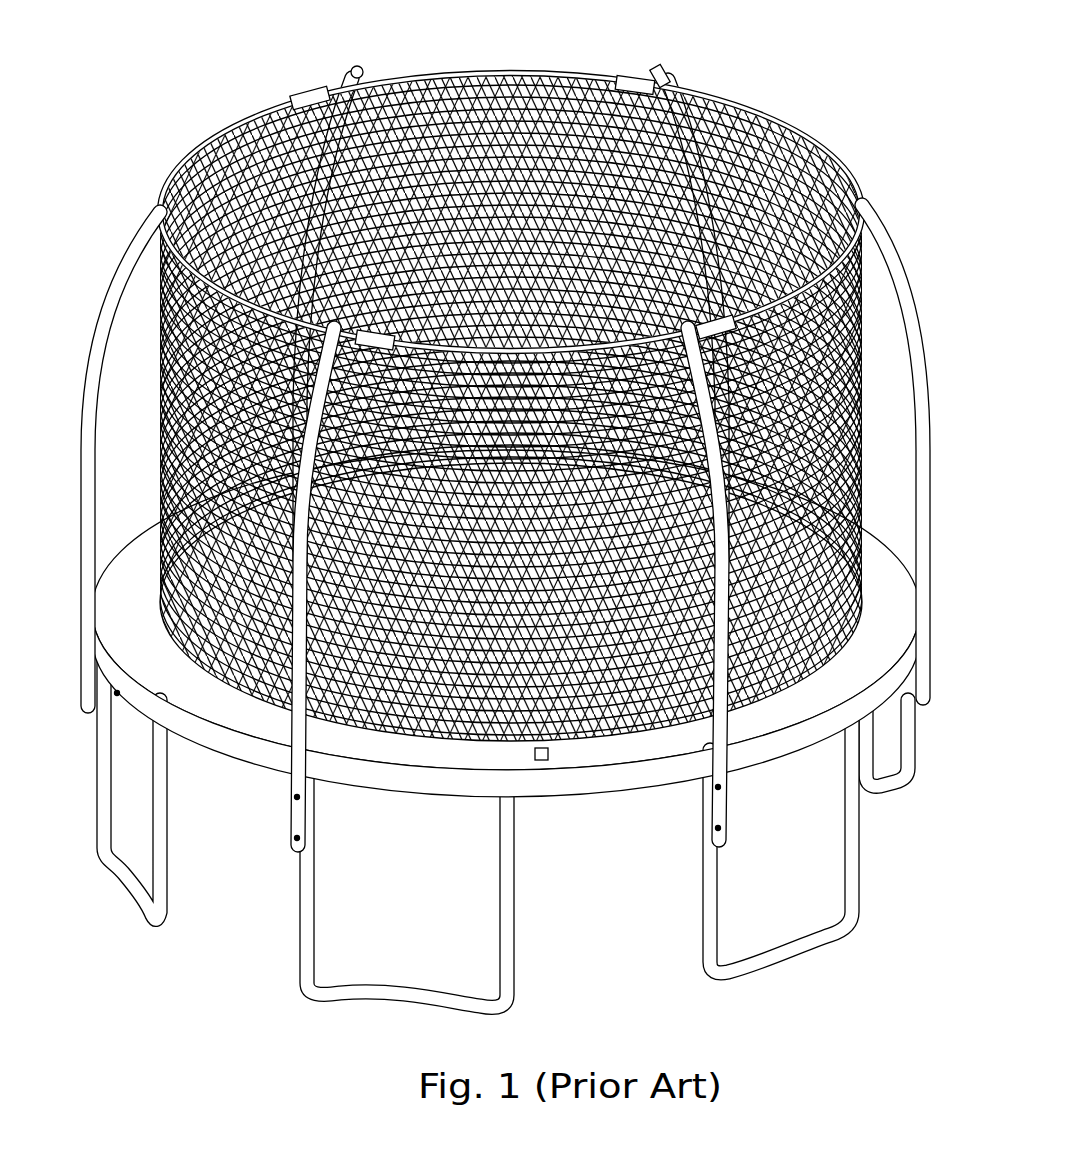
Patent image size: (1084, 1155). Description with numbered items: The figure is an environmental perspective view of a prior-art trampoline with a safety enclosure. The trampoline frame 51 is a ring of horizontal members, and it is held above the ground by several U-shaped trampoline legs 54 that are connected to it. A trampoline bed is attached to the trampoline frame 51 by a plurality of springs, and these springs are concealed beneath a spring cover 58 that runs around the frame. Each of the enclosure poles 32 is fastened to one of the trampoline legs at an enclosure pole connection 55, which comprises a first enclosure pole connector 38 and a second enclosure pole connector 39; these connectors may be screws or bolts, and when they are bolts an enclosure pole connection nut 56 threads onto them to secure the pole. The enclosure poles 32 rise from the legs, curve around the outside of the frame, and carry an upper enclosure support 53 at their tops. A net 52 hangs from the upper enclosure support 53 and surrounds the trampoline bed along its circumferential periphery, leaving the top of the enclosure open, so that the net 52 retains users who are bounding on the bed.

The enclosure pole 32 is at (82, 494).
The first enclosure pole connector 38 is at (80, 650).
The second enclosure pole connector 39 is at (82, 700).
The trampoline frame 51 is at (410, 780).
The net 52 is at (200, 418).
The upper enclosure support 53 is at (497, 71).
The trampoline leg 54 is at (515, 937).
The enclosure pole connection 55 is at (716, 813).
The enclosure pole connection nut 56 is at (892, 694).
The spring cover 58 is at (542, 761).